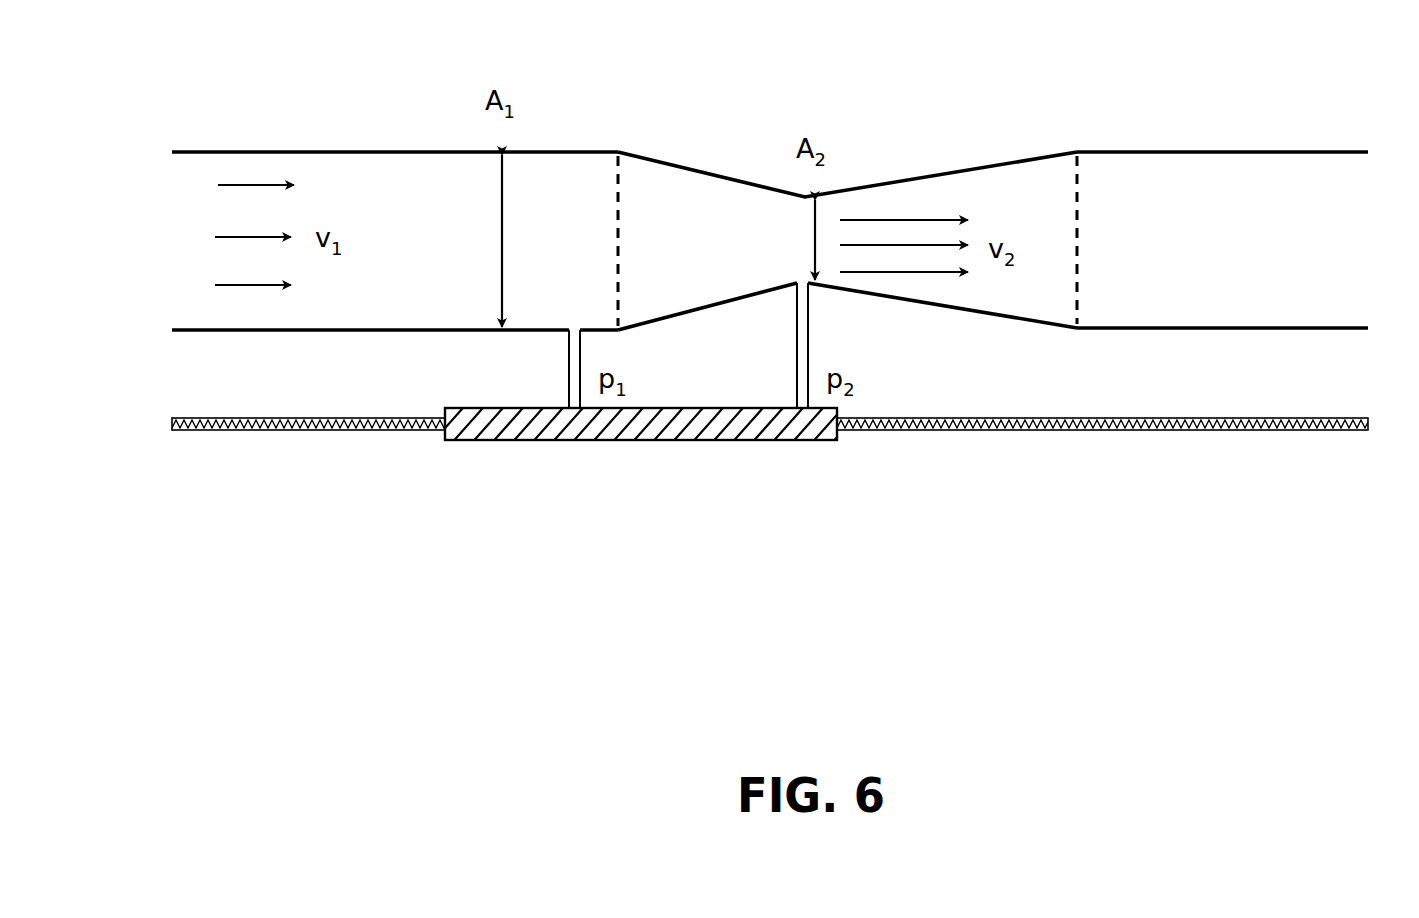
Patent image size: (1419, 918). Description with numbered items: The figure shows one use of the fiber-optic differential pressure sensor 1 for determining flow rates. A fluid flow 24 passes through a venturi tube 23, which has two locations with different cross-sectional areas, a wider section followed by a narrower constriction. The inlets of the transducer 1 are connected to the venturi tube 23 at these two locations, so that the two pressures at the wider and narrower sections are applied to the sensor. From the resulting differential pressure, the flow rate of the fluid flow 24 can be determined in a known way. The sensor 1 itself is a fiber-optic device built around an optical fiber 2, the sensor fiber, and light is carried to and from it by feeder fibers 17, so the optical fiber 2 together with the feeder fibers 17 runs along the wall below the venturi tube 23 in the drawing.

The fiber optic differential pressure sensor 1 is at (632, 425).
The optical fiber 2 is at (776, 478).
The feeder fibers 17 is at (272, 430).
The venturi tube 23 is at (693, 168).
The fluid flow 24 is at (252, 185).